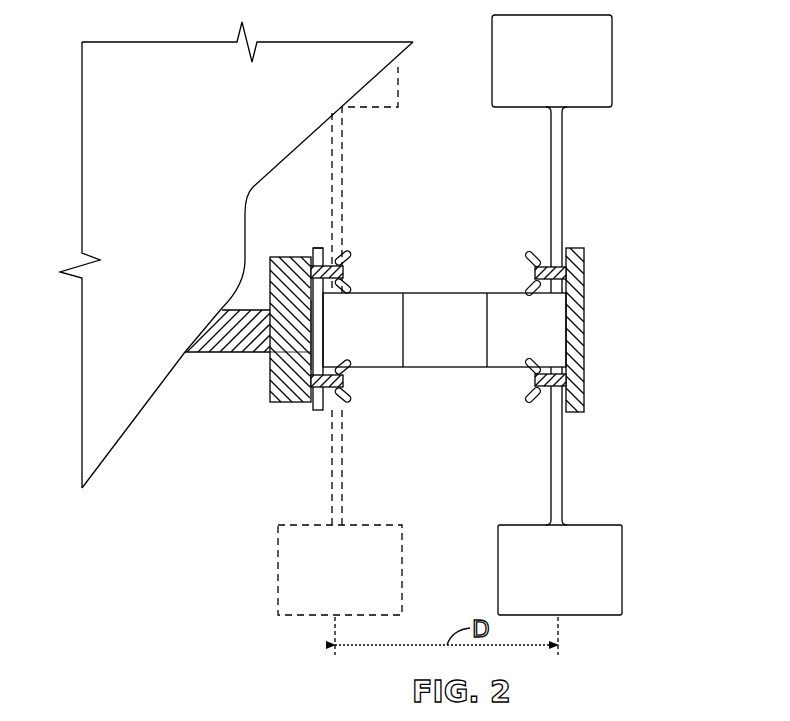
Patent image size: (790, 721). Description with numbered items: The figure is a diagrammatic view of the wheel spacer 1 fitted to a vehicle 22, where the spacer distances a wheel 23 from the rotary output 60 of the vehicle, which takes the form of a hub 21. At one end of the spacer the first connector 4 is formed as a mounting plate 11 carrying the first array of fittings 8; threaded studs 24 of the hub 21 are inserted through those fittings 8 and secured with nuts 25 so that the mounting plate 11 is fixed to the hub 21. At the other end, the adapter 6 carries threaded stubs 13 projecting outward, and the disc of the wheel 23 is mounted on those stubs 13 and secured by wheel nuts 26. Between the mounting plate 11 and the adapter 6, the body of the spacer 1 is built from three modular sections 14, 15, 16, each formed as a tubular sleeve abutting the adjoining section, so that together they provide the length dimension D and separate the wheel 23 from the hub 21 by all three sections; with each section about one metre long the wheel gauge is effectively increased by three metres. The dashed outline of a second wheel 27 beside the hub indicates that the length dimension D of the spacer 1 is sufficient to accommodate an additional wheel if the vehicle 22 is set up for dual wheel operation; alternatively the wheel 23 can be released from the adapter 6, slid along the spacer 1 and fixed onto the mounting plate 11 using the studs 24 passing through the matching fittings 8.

The wheel spacer 1 is at (425, 368).
The first connector 4 is at (320, 413).
The adapter 6 is at (585, 318).
The first array of fittings 8 is at (306, 379).
The mounting plate 11 is at (321, 247).
The threaded stubs 13 is at (535, 272).
The modular section 14 is at (368, 368).
The modular section 15 is at (460, 368).
The modular section 16 is at (503, 368).
The hub 21 is at (273, 368).
The vehicle 22 is at (221, 318).
The wheel 23 is at (612, 60).
The threaded studs 24 is at (348, 270).
The nuts 25 is at (341, 258).
The wheel nuts 26 is at (531, 254).
The second wheel 27 is at (400, 67).
The rotary output 60 is at (270, 355).